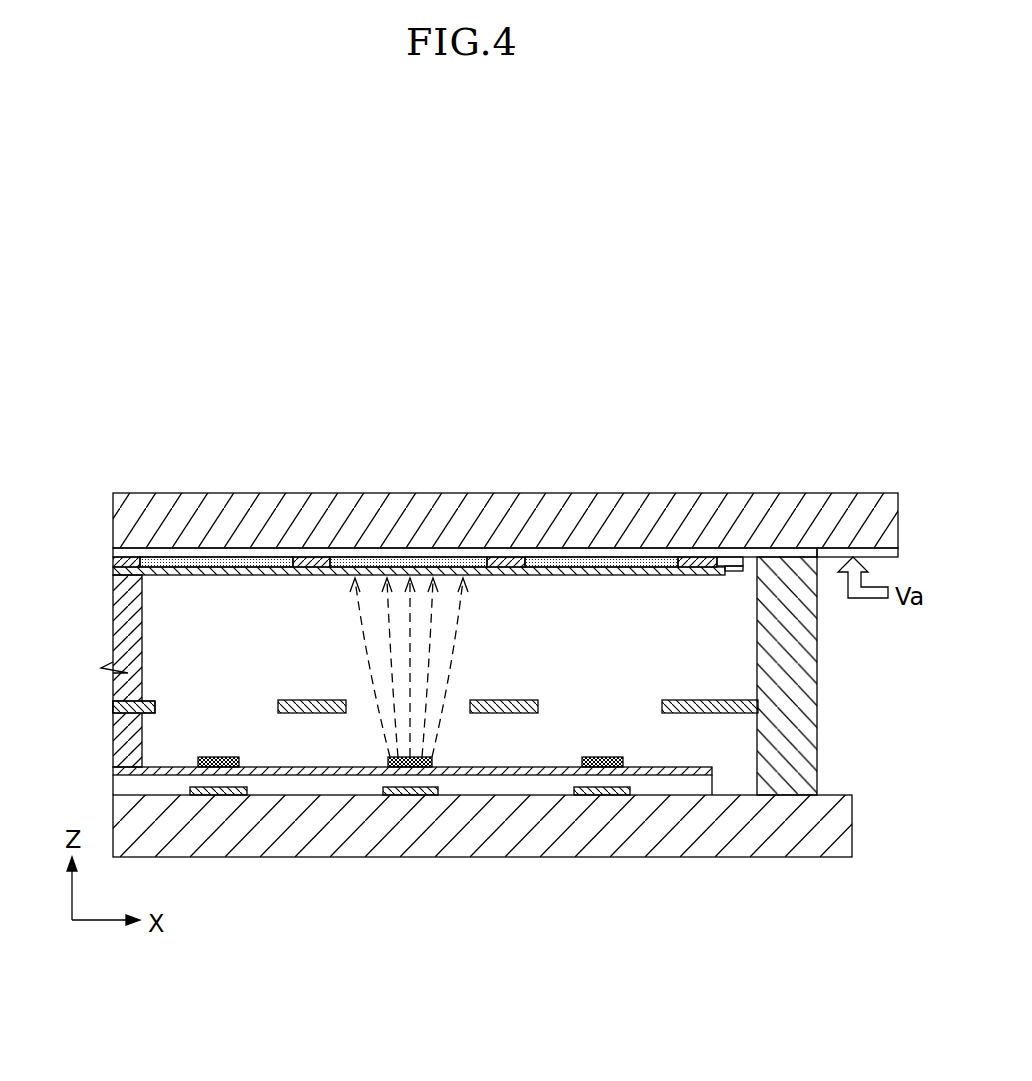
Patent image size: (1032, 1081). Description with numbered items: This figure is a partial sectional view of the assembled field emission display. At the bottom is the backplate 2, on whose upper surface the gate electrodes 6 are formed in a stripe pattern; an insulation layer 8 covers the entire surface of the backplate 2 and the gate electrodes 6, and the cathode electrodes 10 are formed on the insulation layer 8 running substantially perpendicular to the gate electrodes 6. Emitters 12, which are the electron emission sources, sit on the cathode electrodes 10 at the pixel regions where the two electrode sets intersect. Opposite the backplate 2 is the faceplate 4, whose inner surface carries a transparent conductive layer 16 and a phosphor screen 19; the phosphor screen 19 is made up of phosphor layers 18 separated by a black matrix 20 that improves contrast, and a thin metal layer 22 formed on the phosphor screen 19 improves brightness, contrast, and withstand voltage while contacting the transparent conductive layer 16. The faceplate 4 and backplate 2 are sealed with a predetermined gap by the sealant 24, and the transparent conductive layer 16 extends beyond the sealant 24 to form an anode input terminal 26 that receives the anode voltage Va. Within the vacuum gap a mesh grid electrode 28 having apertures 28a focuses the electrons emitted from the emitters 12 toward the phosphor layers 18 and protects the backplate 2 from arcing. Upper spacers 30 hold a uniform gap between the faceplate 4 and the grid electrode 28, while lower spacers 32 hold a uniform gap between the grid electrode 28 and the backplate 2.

The backplate 2 is at (360, 857).
The faceplate 4 is at (553, 495).
The gate electrodes 6 is at (595, 793).
The insulation layer 8 is at (672, 792).
The cathode electrodes 10 is at (505, 773).
The emitters 12 is at (230, 767).
The transparent conductive layer 16 is at (597, 552).
The phosphor layers 18 is at (398, 562).
The phosphor screen 19 is at (337, 440).
The black matrix 20 is at (310, 558).
The metal layer 22 is at (647, 562).
The sealant 24 is at (803, 700).
The anode input terminal 26 is at (855, 552).
The mesh grid electrode 28 is at (523, 702).
The apertures 28a is at (350, 706).
The upper spacers 30 is at (120, 617).
The lower spacers 32 is at (118, 731).